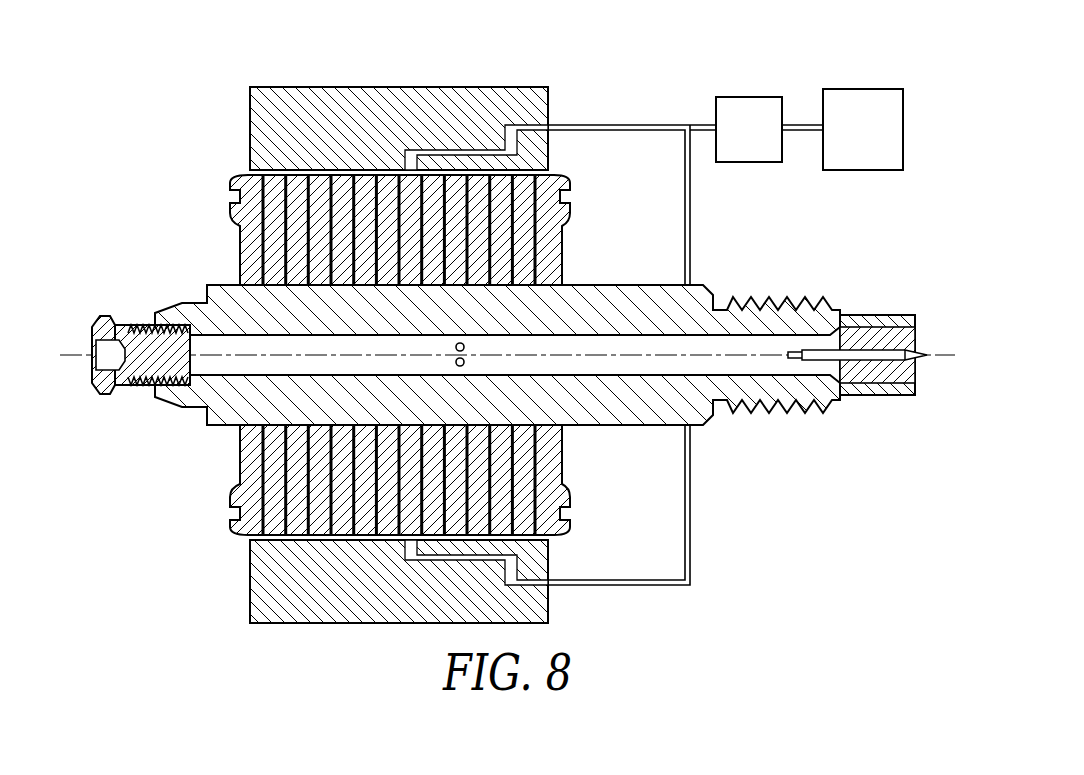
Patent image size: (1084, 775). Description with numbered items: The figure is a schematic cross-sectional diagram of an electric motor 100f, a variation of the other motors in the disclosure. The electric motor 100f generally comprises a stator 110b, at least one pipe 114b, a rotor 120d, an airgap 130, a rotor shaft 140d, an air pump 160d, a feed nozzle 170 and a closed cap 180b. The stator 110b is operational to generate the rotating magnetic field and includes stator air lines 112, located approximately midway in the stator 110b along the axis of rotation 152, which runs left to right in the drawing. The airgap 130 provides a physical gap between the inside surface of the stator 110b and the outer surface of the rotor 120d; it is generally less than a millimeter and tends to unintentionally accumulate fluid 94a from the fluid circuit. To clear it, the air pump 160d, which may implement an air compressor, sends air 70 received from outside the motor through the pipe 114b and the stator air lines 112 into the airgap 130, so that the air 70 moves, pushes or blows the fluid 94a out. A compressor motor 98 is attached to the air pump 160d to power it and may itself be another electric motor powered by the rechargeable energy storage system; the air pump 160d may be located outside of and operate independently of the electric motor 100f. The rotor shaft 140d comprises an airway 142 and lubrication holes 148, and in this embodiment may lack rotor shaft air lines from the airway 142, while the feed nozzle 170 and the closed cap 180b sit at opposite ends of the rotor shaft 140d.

The electric motor 100f is at (193, 85).
The stator 110b is at (250, 128).
The stator air line 112 is at (452, 149).
The pipe 114b is at (653, 125).
The air pump 160d is at (778, 146).
The compressor motor 98 is at (878, 146).
The rotor 120d is at (240, 246).
The airgap 130 is at (245, 172).
The air 70 is at (548, 175).
The fluid 94a is at (548, 176).
The rotor shaft 140d is at (598, 284).
The airway 142 is at (282, 370).
The lubrication holes 148 is at (464, 346).
The axis of rotation 152 is at (930, 353).
The feed nozzle 170 is at (878, 382).
The closed cap 180b is at (105, 318).